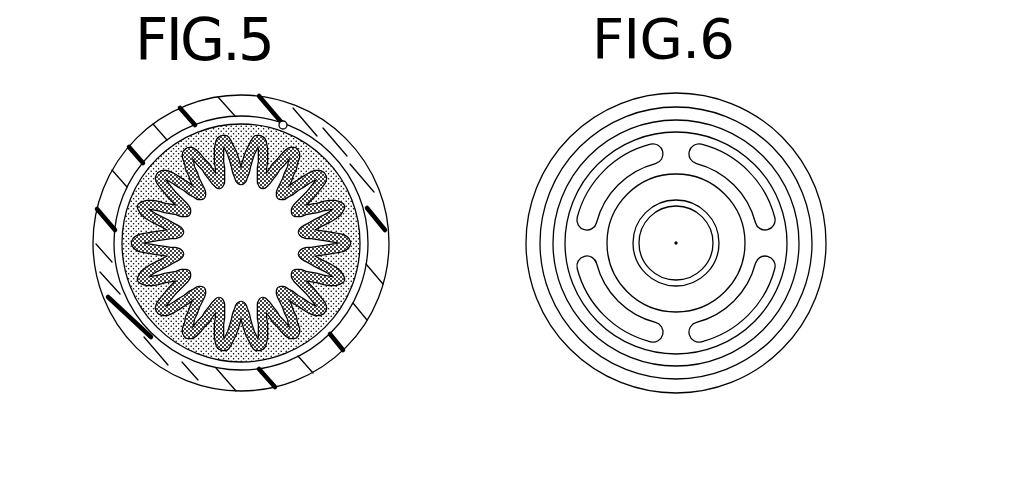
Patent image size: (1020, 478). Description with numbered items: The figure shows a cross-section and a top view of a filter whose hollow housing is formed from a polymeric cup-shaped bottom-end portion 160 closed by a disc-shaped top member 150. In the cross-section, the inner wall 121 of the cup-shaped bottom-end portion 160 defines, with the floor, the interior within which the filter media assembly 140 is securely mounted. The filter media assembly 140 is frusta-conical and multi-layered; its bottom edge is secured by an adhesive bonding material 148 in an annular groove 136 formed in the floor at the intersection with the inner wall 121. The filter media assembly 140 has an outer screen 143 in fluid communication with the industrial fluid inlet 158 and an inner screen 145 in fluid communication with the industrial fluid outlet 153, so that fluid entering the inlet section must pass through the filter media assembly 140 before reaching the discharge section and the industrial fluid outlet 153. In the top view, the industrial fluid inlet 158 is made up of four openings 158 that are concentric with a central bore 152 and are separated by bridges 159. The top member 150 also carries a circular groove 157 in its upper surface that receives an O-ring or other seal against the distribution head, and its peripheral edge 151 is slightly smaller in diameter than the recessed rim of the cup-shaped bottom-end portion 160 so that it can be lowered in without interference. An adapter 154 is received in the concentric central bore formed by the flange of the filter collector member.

In FIG. 5, the inner wall 121 is at (287, 121).
In FIG. 5, the cup-shaped bottom-end portion 160 is at (341, 133).
In FIG. 6, the cup-shaped bottom-end portion 160 is at (712, 102).
In FIG. 5, the inner screen 145 is at (218, 168).
In FIG. 5, the filter media assembly 140 is at (312, 253).
In FIG. 5, the annular groove 136 is at (363, 310).
In FIG. 5, the adhesive bonding material 148 is at (333, 327).
In FIG. 5, the outer screen 143 is at (143, 330).
In FIG. 6, the top member 150 is at (812, 233).
In FIG. 6, the peripheral edge 151 is at (798, 190).
In FIG. 6, the circular groove 157 is at (767, 163).
In FIG. 6, the industrial fluid inlet 158 is at (713, 160).
In FIG. 6, the bridges 159 is at (675, 153).
In FIG. 6, the central bore 152 is at (707, 262).
In FIG. 6, the industrial fluid outlet 153 is at (695, 235).
In FIG. 6, the adapter 154 is at (695, 277).